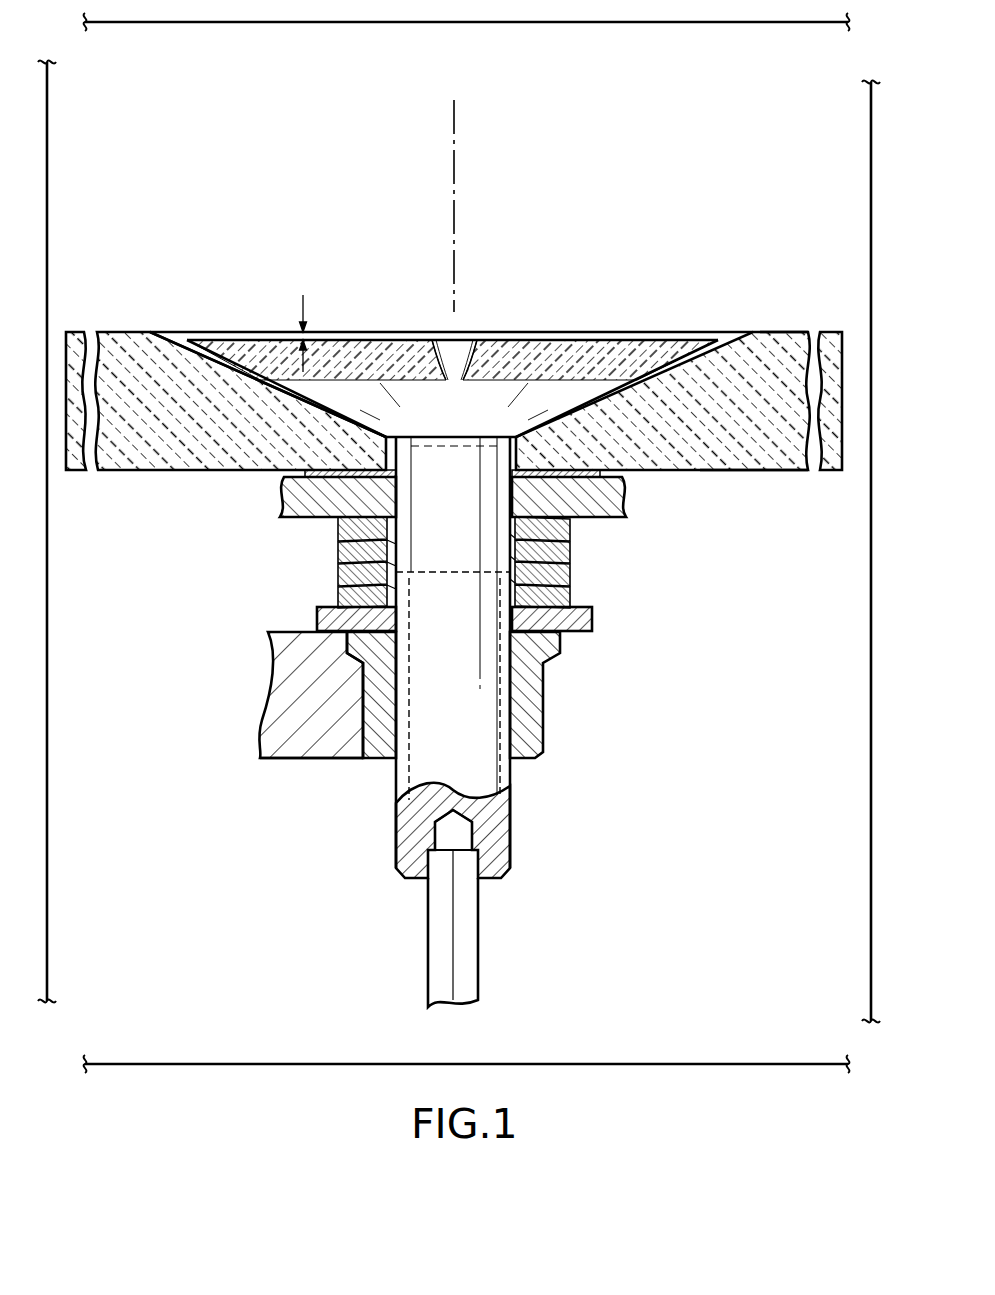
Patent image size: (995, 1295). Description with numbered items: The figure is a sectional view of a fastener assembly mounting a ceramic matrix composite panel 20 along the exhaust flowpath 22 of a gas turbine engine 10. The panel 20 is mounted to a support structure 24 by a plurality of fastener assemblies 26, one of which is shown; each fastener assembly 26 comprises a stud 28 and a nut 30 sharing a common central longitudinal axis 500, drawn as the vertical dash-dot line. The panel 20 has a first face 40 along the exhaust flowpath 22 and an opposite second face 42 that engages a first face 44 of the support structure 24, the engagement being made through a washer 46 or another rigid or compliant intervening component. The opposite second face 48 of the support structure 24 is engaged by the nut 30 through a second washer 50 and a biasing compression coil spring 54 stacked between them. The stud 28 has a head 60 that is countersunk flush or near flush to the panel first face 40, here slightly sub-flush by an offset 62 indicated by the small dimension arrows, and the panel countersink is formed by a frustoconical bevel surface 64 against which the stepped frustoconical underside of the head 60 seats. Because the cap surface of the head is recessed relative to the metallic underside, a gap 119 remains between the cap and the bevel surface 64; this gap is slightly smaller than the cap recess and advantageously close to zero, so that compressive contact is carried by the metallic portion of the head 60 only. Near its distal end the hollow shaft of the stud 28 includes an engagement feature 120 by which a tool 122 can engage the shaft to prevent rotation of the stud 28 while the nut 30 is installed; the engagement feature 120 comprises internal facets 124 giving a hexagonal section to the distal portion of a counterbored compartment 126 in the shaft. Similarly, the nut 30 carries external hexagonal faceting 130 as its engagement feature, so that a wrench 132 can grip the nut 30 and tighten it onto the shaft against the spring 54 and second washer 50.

The gas turbine engine 10 is at (214, 1100).
The panel 20 is at (128, 358).
The exhaust flowpath 22 is at (280, 208).
The support structure 24 is at (593, 500).
The fastener assembly 26 is at (252, 755).
The stud 28 is at (430, 748).
The nut 30 is at (374, 694).
The first face 40 is at (775, 337).
The second face 42 is at (772, 470).
The first face 44 is at (347, 468).
The washer 46 is at (583, 468).
The second face 48 is at (578, 517).
The second washer 50 is at (576, 632).
The biasing compression coil spring 54 is at (571, 592).
The head 60 is at (573, 373).
The offset 62 is at (305, 337).
The frustoconical bevel surface 64 is at (152, 333).
The gap 119 is at (707, 340).
The engagement feature 120 is at (440, 884).
The tool 122 is at (478, 980).
The facets 124 is at (466, 868).
The counterbored compartment 126 is at (458, 833).
The external hexagonal faceting 130 is at (544, 715).
The wrench 132 is at (294, 758).
The central longitudinal axis 500 is at (454, 192).